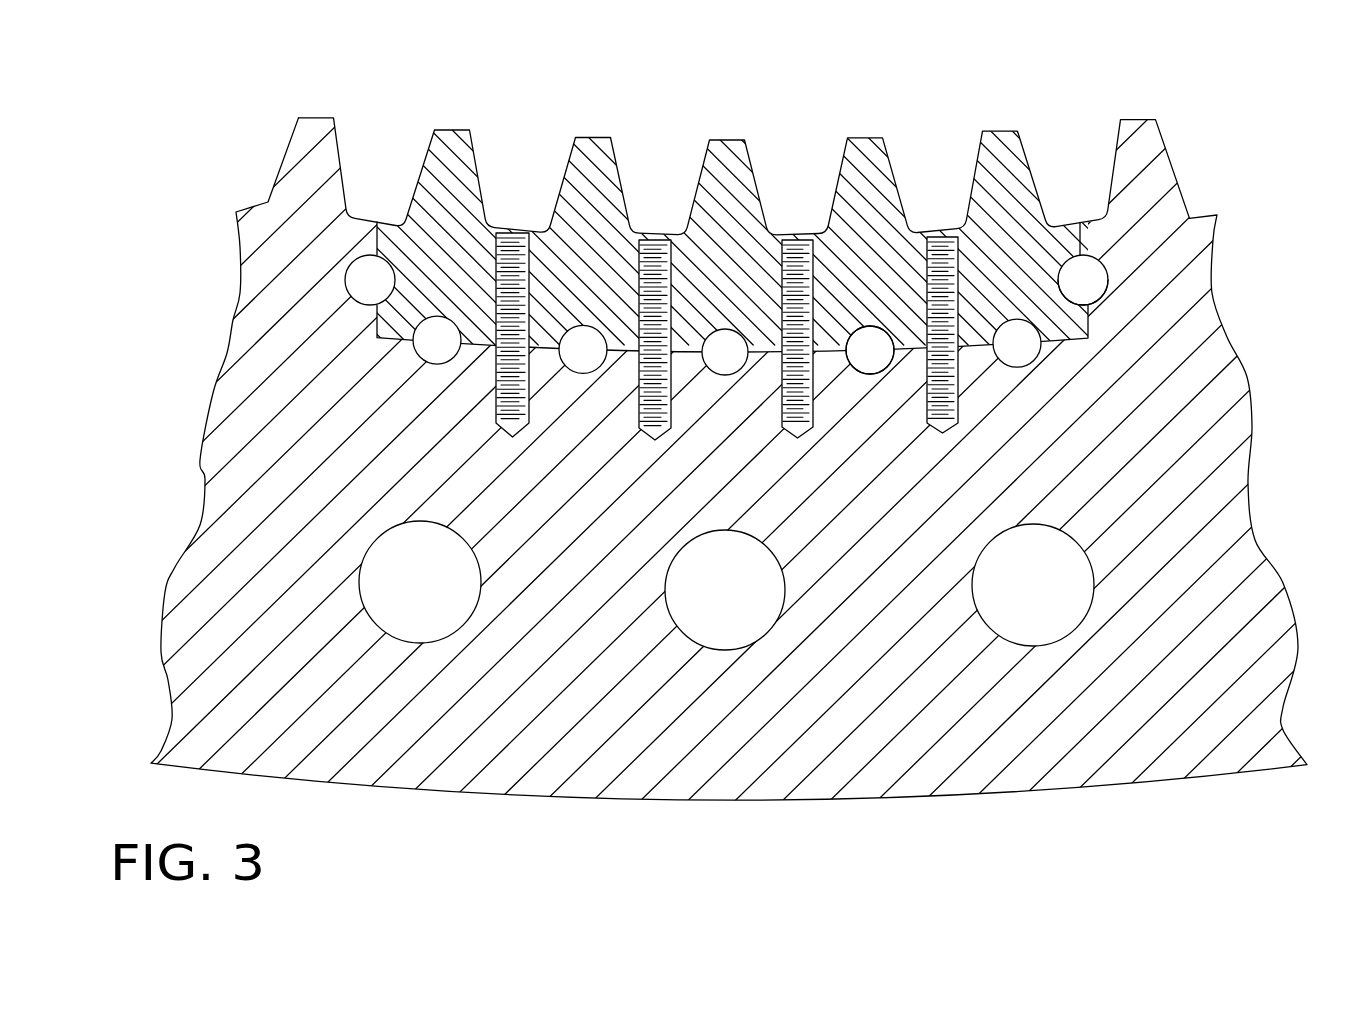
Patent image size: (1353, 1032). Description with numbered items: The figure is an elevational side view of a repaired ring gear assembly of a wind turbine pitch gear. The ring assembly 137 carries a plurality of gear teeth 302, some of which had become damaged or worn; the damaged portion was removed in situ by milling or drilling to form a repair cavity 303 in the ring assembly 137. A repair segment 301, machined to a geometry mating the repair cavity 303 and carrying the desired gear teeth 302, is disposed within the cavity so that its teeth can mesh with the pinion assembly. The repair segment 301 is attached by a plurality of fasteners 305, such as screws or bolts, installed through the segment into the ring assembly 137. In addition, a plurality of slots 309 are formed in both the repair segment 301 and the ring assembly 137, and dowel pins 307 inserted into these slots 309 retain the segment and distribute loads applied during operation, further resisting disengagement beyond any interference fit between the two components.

The ring assembly 137 is at (1160, 582).
The repair segment 301 is at (727, 177).
The gear teeth 302 is at (350, 138).
The repair cavity 303 is at (380, 320).
The fasteners 305 is at (793, 253).
The dowel pins 307 is at (1087, 278).
The slots 309 is at (868, 337).